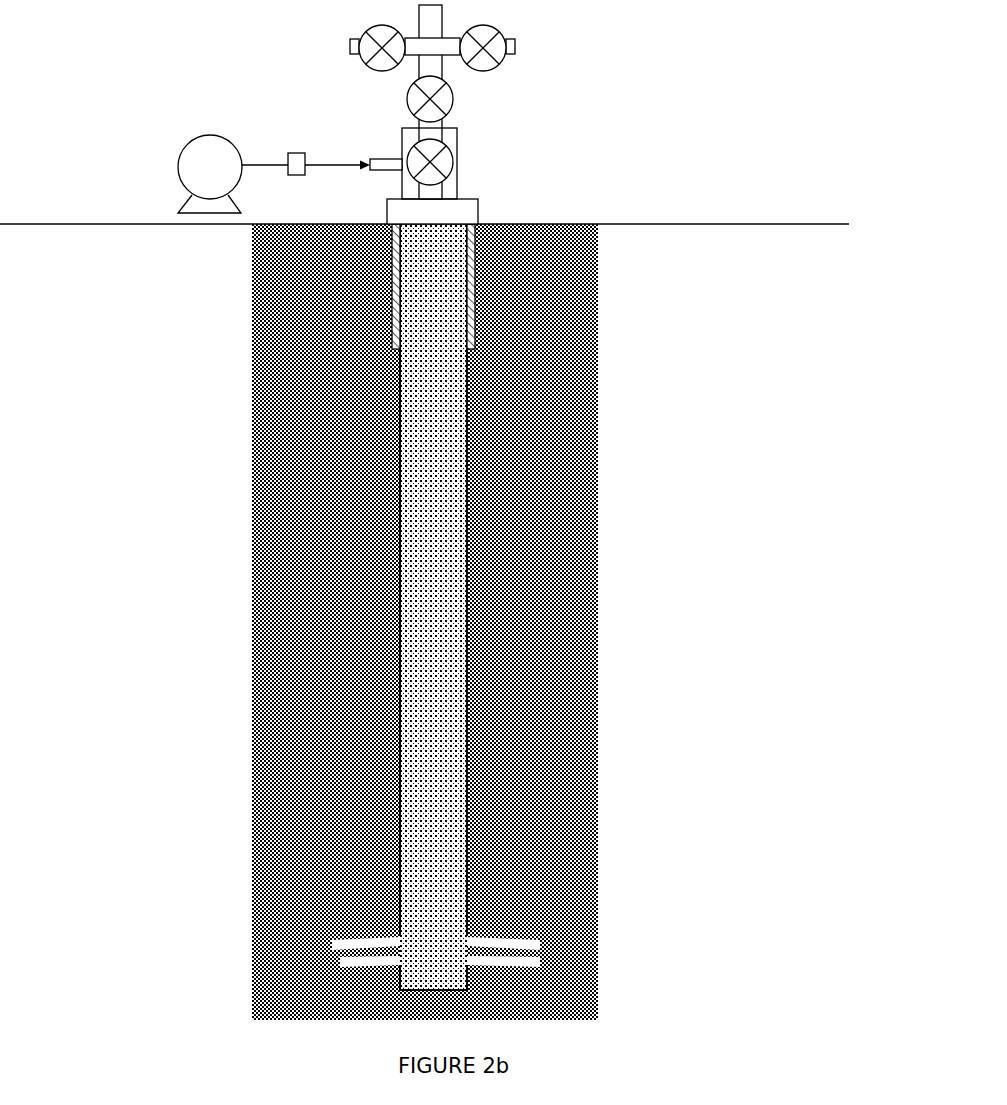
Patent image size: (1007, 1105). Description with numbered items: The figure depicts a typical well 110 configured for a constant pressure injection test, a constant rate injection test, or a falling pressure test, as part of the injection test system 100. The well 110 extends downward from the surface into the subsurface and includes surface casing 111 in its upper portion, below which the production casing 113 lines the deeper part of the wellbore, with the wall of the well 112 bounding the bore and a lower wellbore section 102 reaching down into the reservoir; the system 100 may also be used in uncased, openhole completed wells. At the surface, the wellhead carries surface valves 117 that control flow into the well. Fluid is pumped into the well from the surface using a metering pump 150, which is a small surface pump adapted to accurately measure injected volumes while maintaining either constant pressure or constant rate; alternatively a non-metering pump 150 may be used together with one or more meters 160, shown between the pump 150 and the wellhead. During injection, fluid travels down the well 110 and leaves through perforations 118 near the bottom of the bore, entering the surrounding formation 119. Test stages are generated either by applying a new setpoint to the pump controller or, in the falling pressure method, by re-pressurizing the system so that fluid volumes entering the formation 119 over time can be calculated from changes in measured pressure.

The system 100 is at (398, 645).
The lower wellbore section 102 is at (400, 913).
The well 110 is at (352, 651).
The surface casing 111 is at (470, 344).
The wellbore wall 112 is at (467, 390).
The production casing 113 is at (467, 650).
The surface valves 117 is at (407, 95).
The perforations 118 is at (373, 957).
The formation 119 is at (292, 933).
The metering pump 150 is at (203, 212).
The meter 160 is at (292, 157).